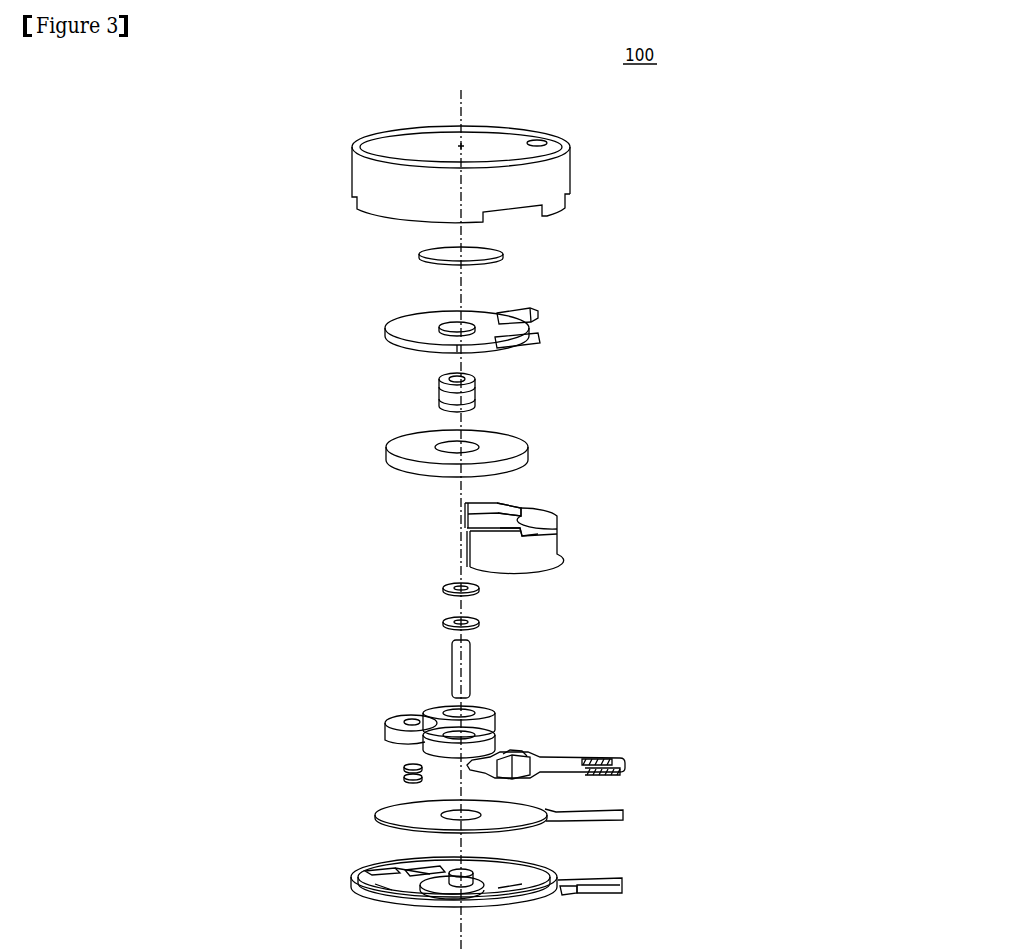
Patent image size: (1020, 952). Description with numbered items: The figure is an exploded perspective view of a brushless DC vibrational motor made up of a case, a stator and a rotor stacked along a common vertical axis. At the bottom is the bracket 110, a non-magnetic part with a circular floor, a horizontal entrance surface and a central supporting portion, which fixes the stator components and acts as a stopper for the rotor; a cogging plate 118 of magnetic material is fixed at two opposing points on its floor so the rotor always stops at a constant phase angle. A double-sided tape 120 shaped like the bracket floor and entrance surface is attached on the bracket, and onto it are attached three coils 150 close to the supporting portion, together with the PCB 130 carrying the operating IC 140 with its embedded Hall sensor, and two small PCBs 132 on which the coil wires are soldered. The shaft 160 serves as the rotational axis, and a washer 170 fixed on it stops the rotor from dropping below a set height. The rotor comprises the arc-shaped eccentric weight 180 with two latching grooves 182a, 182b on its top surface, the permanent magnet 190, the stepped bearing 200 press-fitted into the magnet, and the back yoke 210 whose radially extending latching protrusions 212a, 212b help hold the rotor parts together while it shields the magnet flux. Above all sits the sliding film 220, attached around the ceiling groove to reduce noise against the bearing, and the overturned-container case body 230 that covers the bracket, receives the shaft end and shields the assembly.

The case body 230 is at (560, 170).
The sliding film 220 is at (490, 256).
The back yoke 210 is at (509, 307).
The latching protrusion 212a is at (511, 312).
The latching protrusion 212b is at (540, 345).
The bearing 200 is at (480, 392).
The magnet 190 is at (515, 452).
The weight 180 is at (563, 513).
The latching groove 182a is at (512, 507).
The latching groove 182b is at (558, 536).
The washer 170 is at (475, 618).
The shaft 160 is at (469, 656).
The coils 150 is at (490, 712).
The operating IC 140 is at (518, 752).
The PCB 130 is at (603, 741).
The small PCBs 132 is at (405, 777).
The double-sided tape 120 is at (605, 815).
The cogging plate 118 is at (415, 876).
The bracket 110 is at (508, 867).